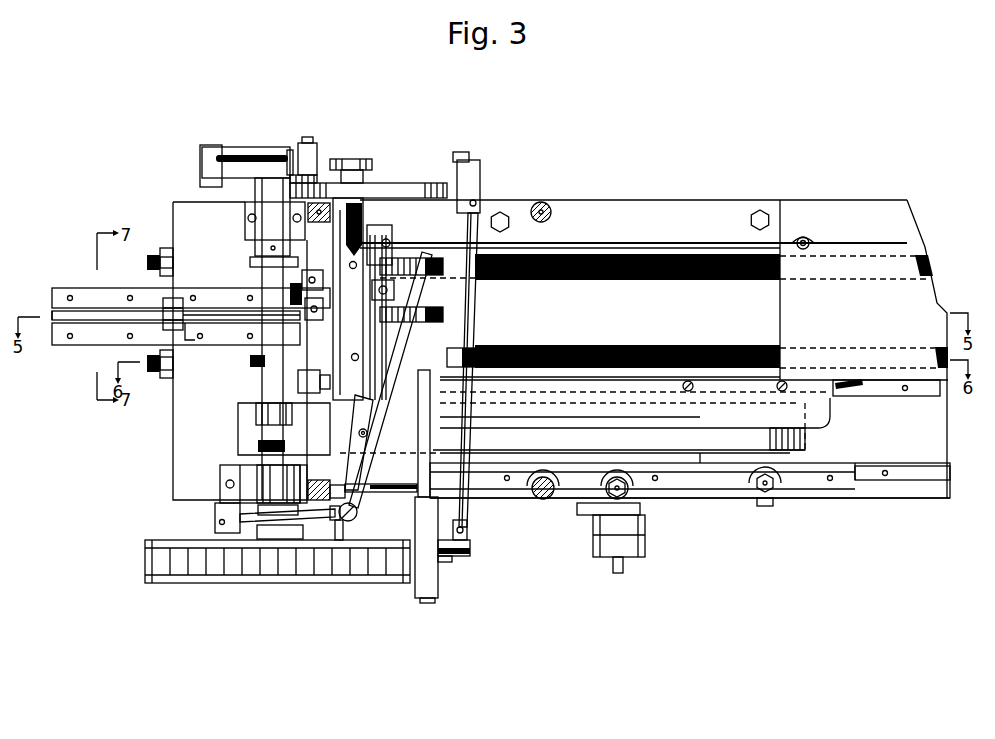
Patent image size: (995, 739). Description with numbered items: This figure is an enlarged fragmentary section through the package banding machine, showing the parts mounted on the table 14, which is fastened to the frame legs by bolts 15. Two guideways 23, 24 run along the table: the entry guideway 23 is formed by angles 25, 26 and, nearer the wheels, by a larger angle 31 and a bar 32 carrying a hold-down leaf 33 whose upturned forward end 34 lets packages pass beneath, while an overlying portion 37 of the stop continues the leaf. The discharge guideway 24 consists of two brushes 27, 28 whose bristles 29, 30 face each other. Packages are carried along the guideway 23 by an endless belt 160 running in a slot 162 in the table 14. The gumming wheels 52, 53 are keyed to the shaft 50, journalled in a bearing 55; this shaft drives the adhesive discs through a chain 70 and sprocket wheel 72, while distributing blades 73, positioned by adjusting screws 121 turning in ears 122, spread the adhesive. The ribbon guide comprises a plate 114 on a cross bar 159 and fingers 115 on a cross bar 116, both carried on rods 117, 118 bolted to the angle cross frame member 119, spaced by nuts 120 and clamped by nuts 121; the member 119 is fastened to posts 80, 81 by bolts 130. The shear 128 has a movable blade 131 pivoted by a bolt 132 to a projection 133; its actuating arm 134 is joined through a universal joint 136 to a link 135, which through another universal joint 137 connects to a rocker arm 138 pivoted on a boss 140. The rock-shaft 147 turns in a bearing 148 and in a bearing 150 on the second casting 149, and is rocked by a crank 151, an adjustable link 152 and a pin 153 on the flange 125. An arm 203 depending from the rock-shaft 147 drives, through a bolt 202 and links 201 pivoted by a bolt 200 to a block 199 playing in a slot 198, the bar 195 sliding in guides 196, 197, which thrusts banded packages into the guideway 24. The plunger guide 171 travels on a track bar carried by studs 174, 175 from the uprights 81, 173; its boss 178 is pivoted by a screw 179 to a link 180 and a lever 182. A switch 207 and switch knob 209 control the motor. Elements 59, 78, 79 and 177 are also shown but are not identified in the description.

The table 14 is at (693, 497).
The bolts 15 is at (770, 498).
The guideway 23 is at (907, 492).
The guideway 24 is at (930, 290).
The angle 25 is at (915, 396).
The angle 26 is at (890, 465).
The brush 27 is at (568, 250).
The brush 28 is at (572, 370).
The bristles 29 is at (535, 350).
The bristles 30 is at (522, 280).
The larger angle 31 is at (825, 482).
The bar 32 is at (840, 381).
The leaf 33 is at (672, 437).
The forward end 34 is at (830, 422).
The overlying portion 37 is at (430, 440).
The shaft 50 is at (365, 200).
The wheel 52 is at (437, 258).
The wheel 53 is at (470, 350).
The bearing 55 is at (375, 186).
The collar 59 is at (252, 262).
The chain 70 is at (333, 159).
The sprocket wheel 72 is at (363, 172).
The distributing blades 73 is at (170, 250).
The pivot pin 78 is at (541, 202).
The pivot stud 79 is at (546, 499).
The post 80 is at (318, 222).
The post 81 is at (340, 495).
The plate 114 is at (386, 298).
The fingers 115 is at (350, 320).
The cross bar 116 is at (365, 265).
The rod 117 is at (365, 212).
The rod 118 is at (354, 368).
The angle cross frame member 119 is at (298, 380).
The nuts 120 is at (388, 230).
The adjusting screws 121 is at (390, 242).
The ears 122 is at (160, 372).
The flange 125 is at (240, 157).
The shear 128 is at (398, 328).
The bolts 130 is at (350, 500).
The movable shear blade 131 is at (405, 322).
The bolt 132 is at (368, 433).
The projection 133 is at (370, 455).
The actuating arm 134 is at (357, 516).
The link 135 is at (295, 522).
The universal joint 136 is at (338, 540).
The universal joint 137 is at (258, 540).
The rocker arm 138 is at (215, 512).
The boss 140 is at (240, 470).
The rock-shaft 147 is at (262, 280).
The bearing 148 is at (285, 470).
The second casting 149 is at (245, 232).
The bearing 150 is at (262, 210).
The crank 151 is at (262, 147).
The adjustable link 152 is at (290, 150).
The pin 153 is at (307, 143).
The cross bar 159 is at (392, 258).
The endless belt 160 is at (735, 492).
The slot 162 is at (705, 453).
The guide 171 is at (438, 585).
The upright 173 is at (292, 410).
The stud 174 is at (405, 492).
The stud 175 is at (460, 403).
The guide line 177 is at (470, 418).
The boss 178 is at (450, 556).
The screw 179 is at (470, 545).
The link 180 is at (467, 525).
The lever 182 is at (478, 190).
The bar 195 is at (140, 315).
The guide 196 is at (98, 292).
The guide 197 is at (88, 345).
The slot 198 is at (80, 317).
The block 199 is at (192, 338).
The bolt 200 is at (180, 325).
The links 201 is at (238, 316).
The bolt 202 is at (300, 298).
The arm 203 is at (315, 316).
The switch 207 is at (645, 535).
The switch knob 209 is at (618, 573).